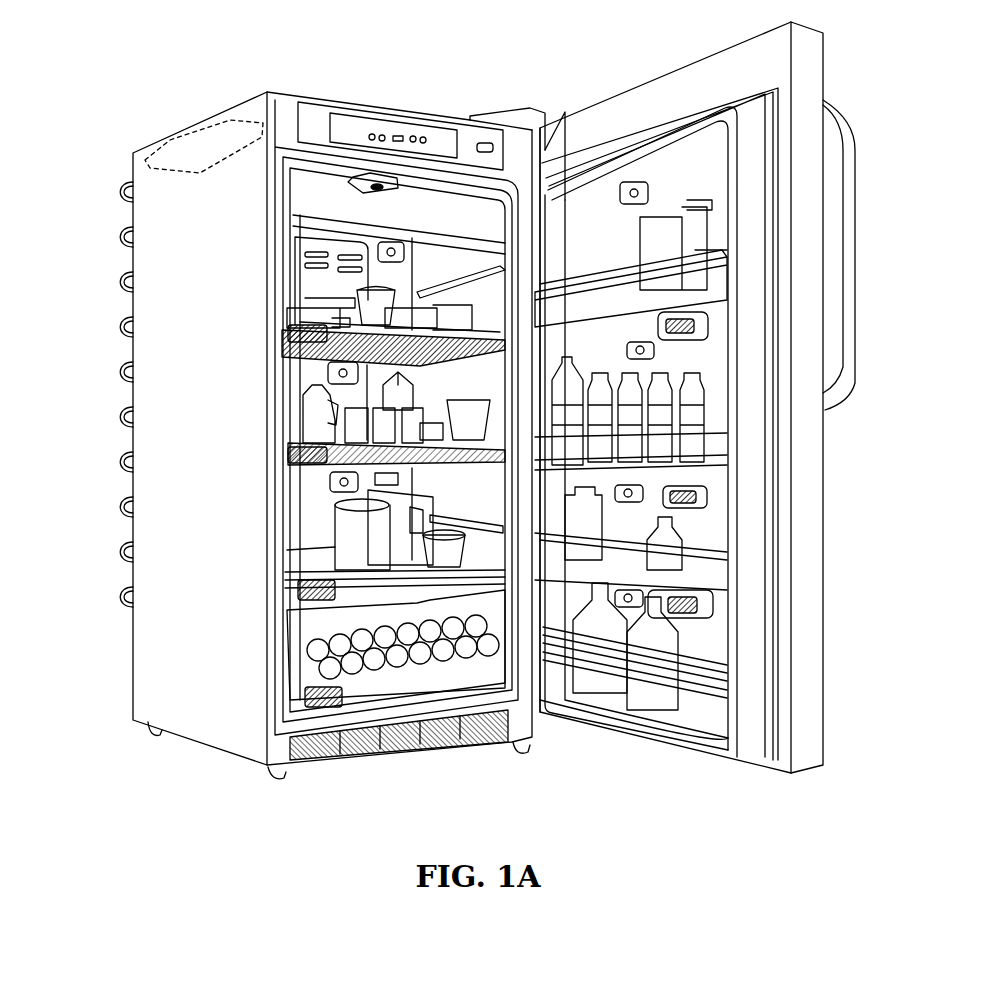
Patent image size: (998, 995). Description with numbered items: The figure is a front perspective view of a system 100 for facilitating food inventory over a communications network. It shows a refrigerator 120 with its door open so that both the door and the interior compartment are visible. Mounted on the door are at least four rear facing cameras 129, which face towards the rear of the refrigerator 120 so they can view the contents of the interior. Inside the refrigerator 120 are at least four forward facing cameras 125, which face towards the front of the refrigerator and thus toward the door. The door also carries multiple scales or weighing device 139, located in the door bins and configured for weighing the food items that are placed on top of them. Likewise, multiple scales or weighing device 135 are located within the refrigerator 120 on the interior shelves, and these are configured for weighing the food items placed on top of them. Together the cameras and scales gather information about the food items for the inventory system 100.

The system for facilitating food inventory 100 is at (905, 109).
The refrigerator 120 is at (148, 485).
The forward facing cameras 125 is at (372, 177).
The rear facing cameras 129 is at (627, 187).
The scales or weighing device 135 is at (292, 332).
The scales or weighing device 139 is at (705, 322).